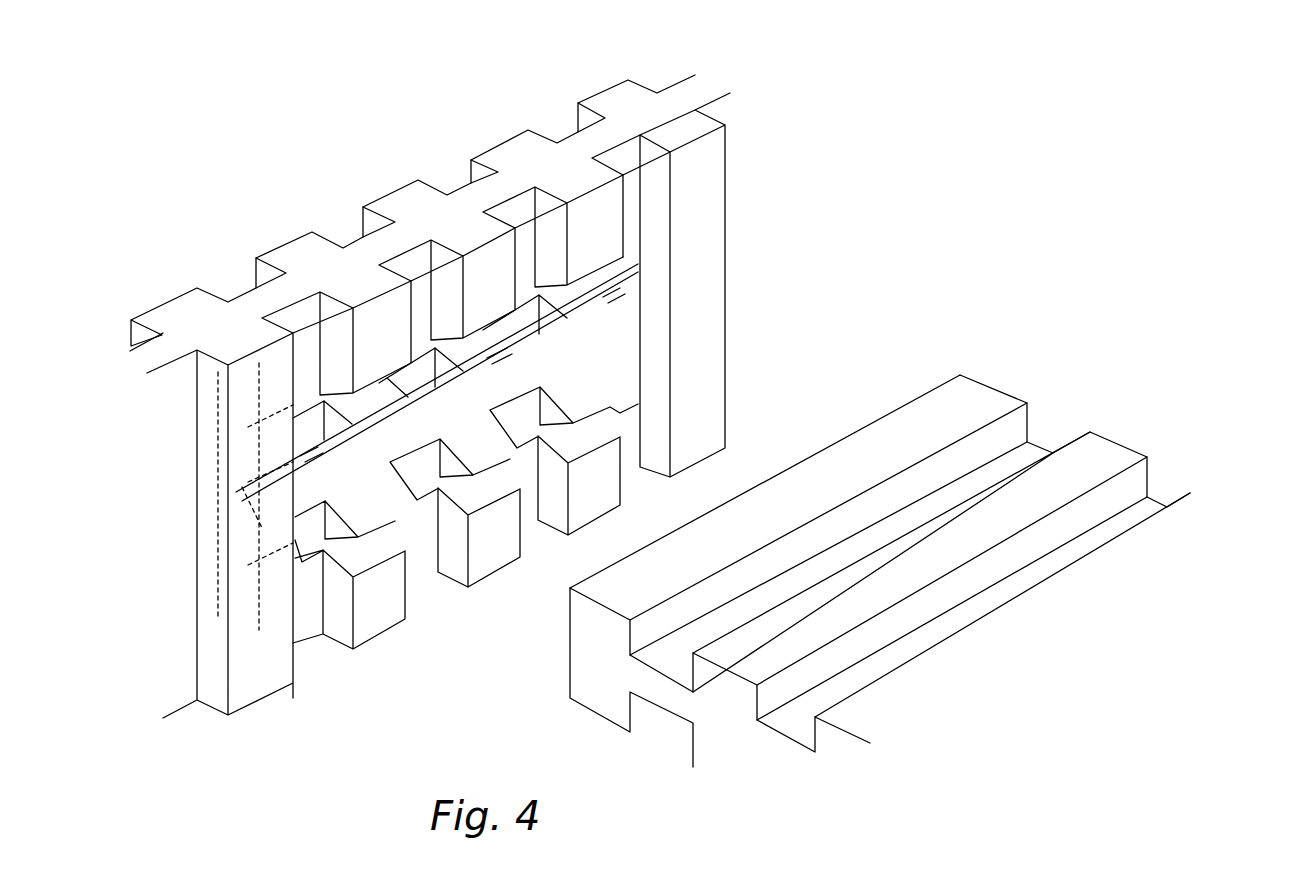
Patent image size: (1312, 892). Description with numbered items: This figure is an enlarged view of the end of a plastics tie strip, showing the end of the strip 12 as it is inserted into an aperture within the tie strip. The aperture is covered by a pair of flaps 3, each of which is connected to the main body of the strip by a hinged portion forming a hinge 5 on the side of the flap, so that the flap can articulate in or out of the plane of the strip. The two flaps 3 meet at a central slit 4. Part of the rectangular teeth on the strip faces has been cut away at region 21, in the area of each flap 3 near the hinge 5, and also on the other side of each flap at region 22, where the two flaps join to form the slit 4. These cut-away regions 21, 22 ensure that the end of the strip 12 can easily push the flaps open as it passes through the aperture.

The flaps 3 is at (625, 268).
The central slit 4 is at (588, 324).
The hinge 5 is at (320, 393).
The end of the strip 12 is at (907, 402).
The cut-away teeth region near hinge 21 is at (479, 352).
The cut-away teeth region at slit 22 is at (585, 398).